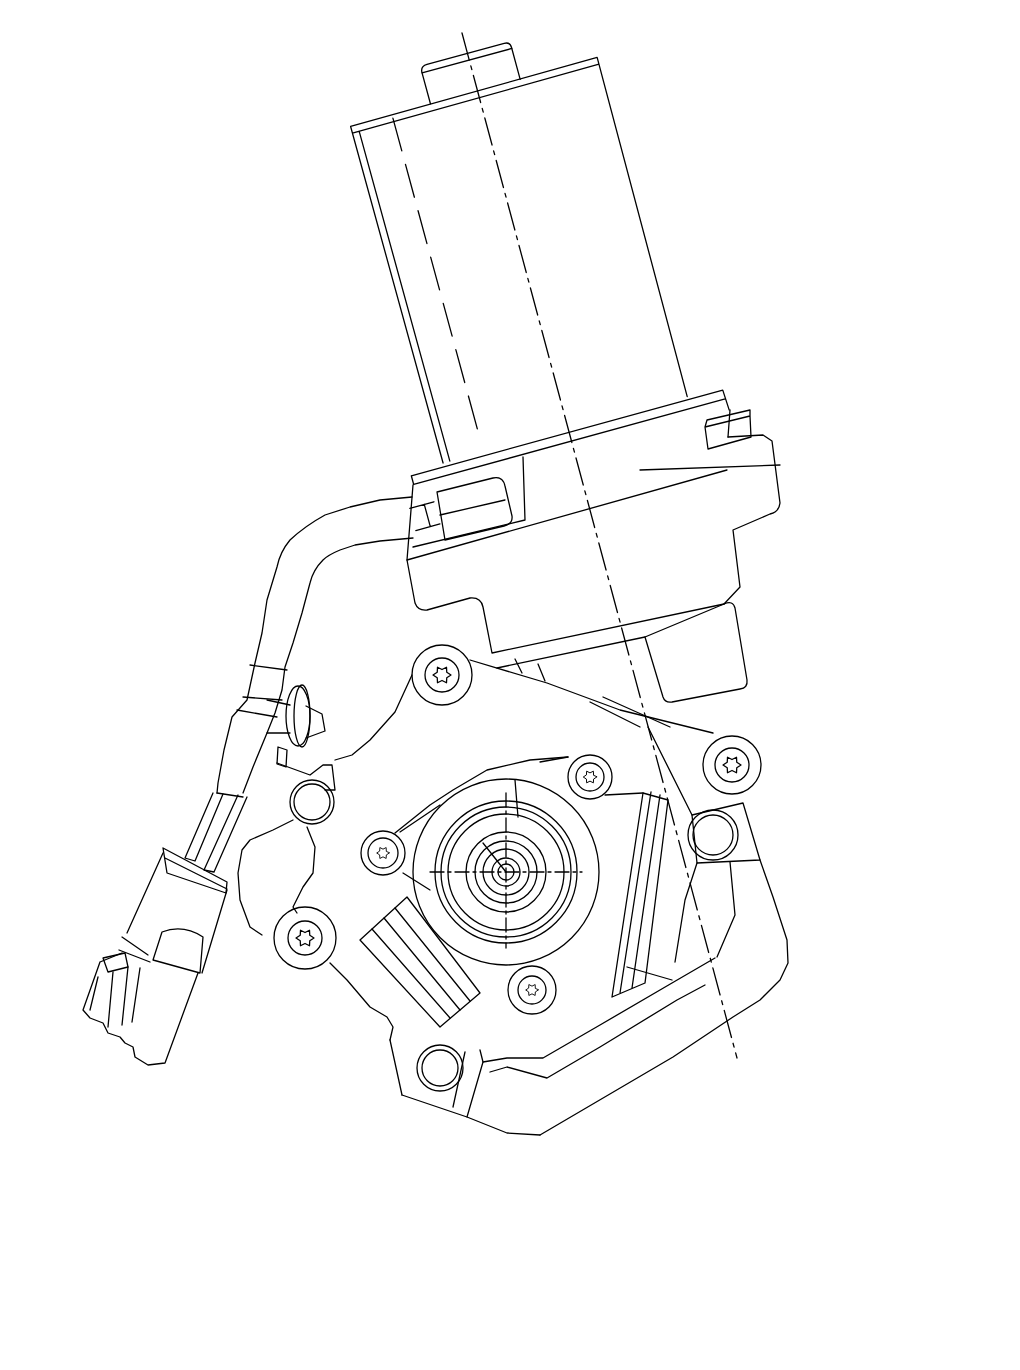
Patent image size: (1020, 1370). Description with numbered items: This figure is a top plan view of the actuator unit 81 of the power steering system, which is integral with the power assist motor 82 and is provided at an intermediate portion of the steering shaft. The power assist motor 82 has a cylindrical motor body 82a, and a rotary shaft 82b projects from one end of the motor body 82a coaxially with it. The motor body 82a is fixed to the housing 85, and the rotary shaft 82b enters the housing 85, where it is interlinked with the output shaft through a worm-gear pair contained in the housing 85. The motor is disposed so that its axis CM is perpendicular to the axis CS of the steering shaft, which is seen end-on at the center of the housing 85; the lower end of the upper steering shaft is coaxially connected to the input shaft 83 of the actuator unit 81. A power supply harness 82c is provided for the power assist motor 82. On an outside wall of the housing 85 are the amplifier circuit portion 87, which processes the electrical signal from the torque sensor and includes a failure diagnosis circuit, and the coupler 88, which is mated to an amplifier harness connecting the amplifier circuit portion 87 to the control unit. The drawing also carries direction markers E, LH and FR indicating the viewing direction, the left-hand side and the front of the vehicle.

The actuator unit 81 is at (228, 398).
The power assist motor 82 is at (444, 543).
The motor body 82a is at (402, 279).
The rotary shaft 82b is at (590, 633).
The power supply harness 82c is at (260, 623).
The input shaft 83 is at (504, 790).
The housing 85 is at (713, 725).
The amplifier circuit portion 87 is at (673, 990).
The coupler 88 is at (393, 1040).
The axis of the power assist motor CM is at (462, 41).
The axis of the steering shaft CS is at (470, 795).
The direction E is at (642, 1132).
The left-hand direction LH is at (337, 1210).
The front direction FR is at (336, 1221).